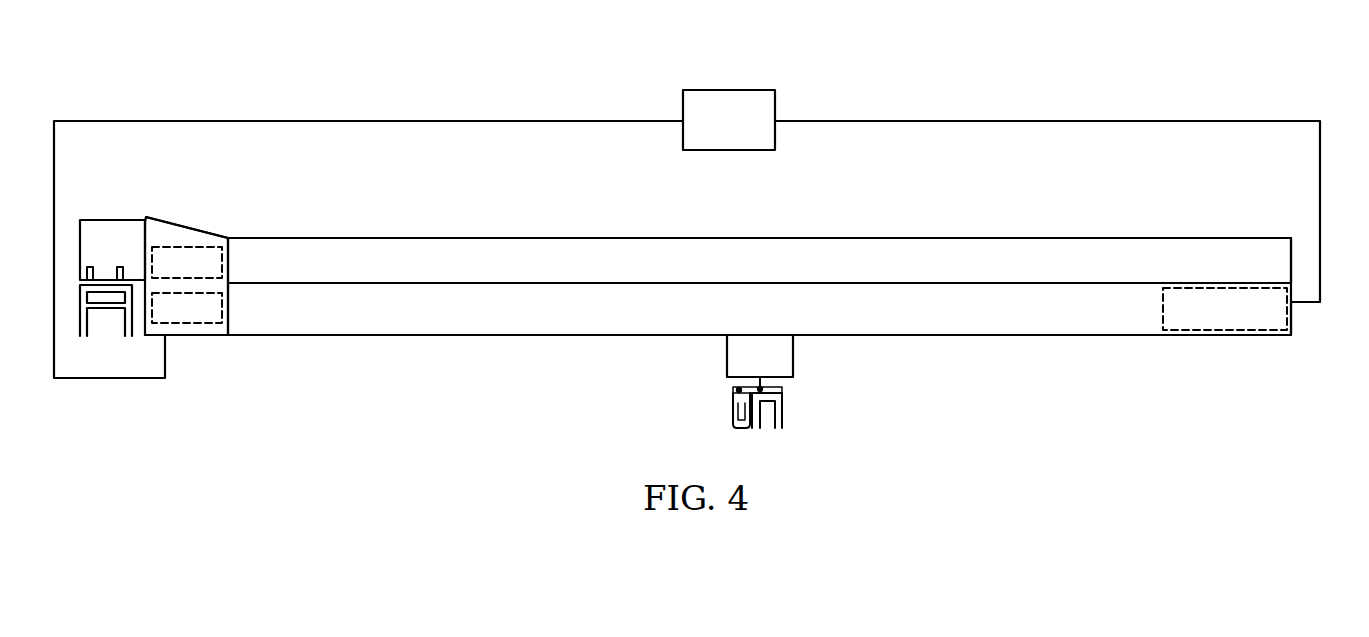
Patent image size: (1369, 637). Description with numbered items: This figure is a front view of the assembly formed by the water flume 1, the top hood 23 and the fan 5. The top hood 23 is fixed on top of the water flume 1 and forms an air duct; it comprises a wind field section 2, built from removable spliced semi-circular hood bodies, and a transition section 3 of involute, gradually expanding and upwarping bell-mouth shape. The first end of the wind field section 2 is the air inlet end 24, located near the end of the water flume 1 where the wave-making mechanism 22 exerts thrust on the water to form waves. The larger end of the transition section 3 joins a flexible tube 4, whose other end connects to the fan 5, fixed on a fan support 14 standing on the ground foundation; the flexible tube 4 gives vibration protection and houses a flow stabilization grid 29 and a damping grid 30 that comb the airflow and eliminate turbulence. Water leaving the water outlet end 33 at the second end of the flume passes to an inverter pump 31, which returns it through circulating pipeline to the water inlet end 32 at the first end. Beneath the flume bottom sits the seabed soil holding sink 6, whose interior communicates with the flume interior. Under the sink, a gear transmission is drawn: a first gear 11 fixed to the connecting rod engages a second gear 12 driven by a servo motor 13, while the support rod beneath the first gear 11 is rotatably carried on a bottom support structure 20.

The water flume 1 is at (1025, 317).
The wind field section 2 is at (873, 223).
The transition section 3 is at (190, 238).
The flexible tube 4 is at (147, 217).
The fan 5 is at (103, 232).
The seabed soil holding sink 6 is at (767, 355).
The first gear 11 is at (780, 390).
The second gear 12 is at (740, 390).
The servo motor 13 is at (733, 403).
The fan support 14 is at (92, 310).
The bottom support structure 20 is at (778, 410).
The wave-making mechanism 22 is at (1243, 318).
The top hood 23 is at (767, 258).
The air inlet end 24 is at (1287, 230).
The flow stabilization grid 29 is at (222, 252).
The damping grid 30 is at (222, 323).
The inverter pump 31 is at (743, 105).
The water inlet end 32 is at (1293, 308).
The water outlet end 33 is at (177, 347).